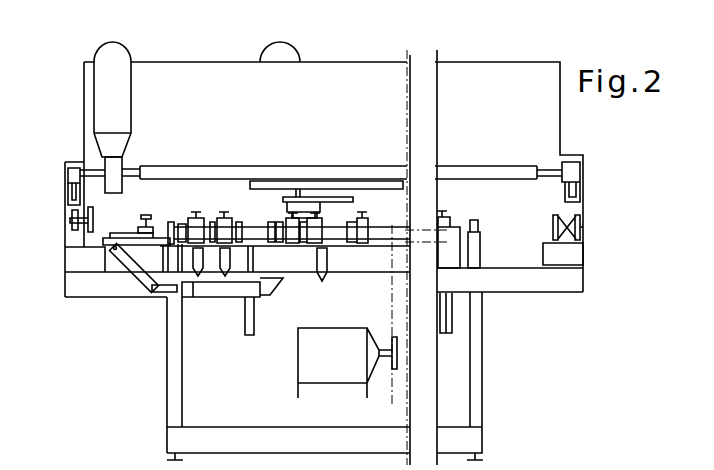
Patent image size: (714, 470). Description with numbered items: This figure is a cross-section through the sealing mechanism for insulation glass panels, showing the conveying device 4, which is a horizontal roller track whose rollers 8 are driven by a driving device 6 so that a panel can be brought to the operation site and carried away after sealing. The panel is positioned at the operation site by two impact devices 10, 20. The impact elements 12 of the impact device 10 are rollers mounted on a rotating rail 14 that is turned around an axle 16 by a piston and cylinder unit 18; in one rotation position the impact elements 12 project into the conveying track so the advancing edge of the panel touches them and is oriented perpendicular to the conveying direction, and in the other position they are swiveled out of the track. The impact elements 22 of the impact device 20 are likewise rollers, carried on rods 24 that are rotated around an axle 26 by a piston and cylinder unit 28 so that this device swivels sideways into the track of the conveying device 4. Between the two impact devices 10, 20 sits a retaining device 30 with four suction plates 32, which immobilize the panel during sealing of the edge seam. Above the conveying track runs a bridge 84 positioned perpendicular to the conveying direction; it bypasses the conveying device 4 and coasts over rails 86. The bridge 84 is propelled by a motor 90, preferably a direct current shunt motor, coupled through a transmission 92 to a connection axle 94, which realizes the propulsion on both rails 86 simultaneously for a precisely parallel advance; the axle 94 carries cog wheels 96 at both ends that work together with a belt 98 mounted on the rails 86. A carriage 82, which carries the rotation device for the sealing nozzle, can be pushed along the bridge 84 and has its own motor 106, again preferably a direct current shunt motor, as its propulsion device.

The conveying device 4 is at (378, 213).
The driving device 6 is at (300, 356).
The rollers 8 is at (273, 246).
The impact device 10 is at (214, 198).
The impact elements 12 is at (195, 214).
The rotating rail 14 is at (257, 226).
The axle 16 is at (376, 242).
The piston and cylinder unit 18 is at (444, 253).
The impact device 20 is at (143, 197).
The impact elements 22 is at (153, 217).
The rods 24 is at (133, 233).
The axle 26 is at (128, 270).
The piston and cylinder unit 28 is at (203, 290).
The retaining device 30 is at (307, 258).
The suction plates 32 is at (228, 223).
The carriage 82 is at (273, 181).
The bridge 84 is at (527, 75).
The rails 86 is at (580, 222).
The motor 90 is at (107, 52).
The transmission 92 is at (105, 163).
The axle 94 is at (480, 170).
The cog wheels 96 is at (72, 173).
The belt 98 is at (72, 192).
The motor 106 is at (289, 52).